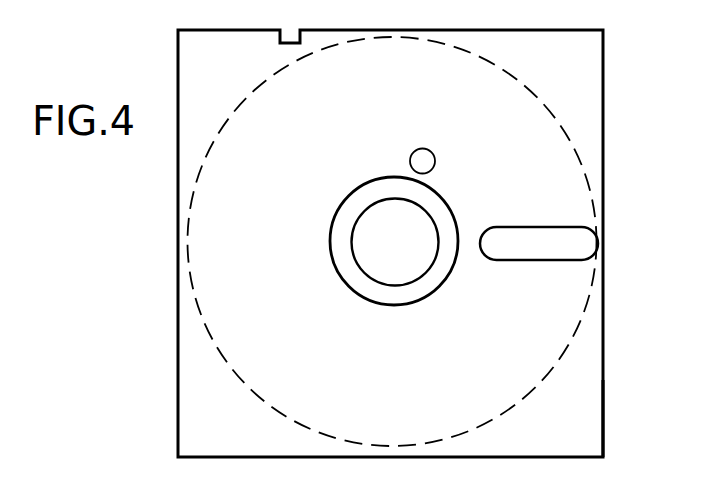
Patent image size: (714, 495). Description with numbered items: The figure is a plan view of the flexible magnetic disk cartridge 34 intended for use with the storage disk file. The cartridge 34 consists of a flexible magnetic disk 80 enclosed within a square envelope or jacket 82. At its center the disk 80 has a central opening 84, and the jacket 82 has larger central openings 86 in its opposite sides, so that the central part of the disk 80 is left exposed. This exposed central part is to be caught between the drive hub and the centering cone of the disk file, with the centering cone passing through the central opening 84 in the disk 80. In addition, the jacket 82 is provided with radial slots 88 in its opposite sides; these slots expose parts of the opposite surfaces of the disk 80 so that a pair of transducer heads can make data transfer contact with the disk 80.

The flexible magnetic disk cartridge 34 is at (611, 131).
The flexible magnetic disk 80 is at (568, 347).
The envelope or jacket 82 is at (603, 420).
The central opening 84 is at (428, 258).
The central openings 86 is at (383, 303).
The radial slots 88 is at (529, 231).